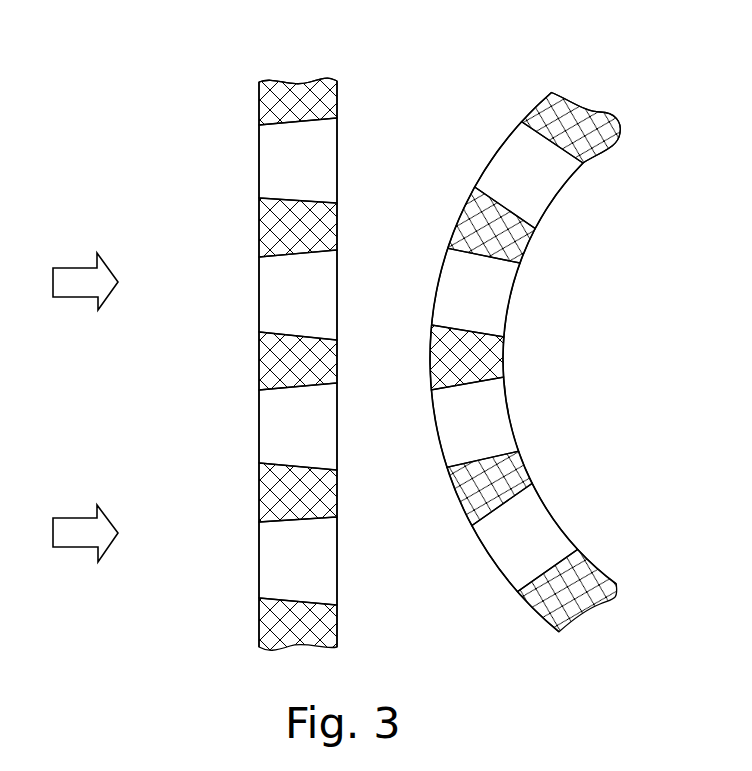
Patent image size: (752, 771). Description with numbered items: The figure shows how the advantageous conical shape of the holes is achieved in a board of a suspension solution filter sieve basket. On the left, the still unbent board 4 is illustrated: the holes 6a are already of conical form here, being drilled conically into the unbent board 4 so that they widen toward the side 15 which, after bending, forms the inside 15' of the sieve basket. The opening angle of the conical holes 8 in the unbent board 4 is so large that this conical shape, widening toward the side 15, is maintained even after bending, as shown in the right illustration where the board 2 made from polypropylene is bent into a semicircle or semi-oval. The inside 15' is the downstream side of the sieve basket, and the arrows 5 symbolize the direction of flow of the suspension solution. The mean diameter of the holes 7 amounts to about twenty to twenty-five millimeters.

The board 2 is at (541, 111).
The unbent board 4 is at (272, 104).
The arrow 5 is at (70, 293).
The holes 6a is at (310, 147).
The holes 7 is at (270, 170).
The conical holes 8 is at (555, 193).
The side 15 is at (348, 118).
The inside 15' is at (621, 162).